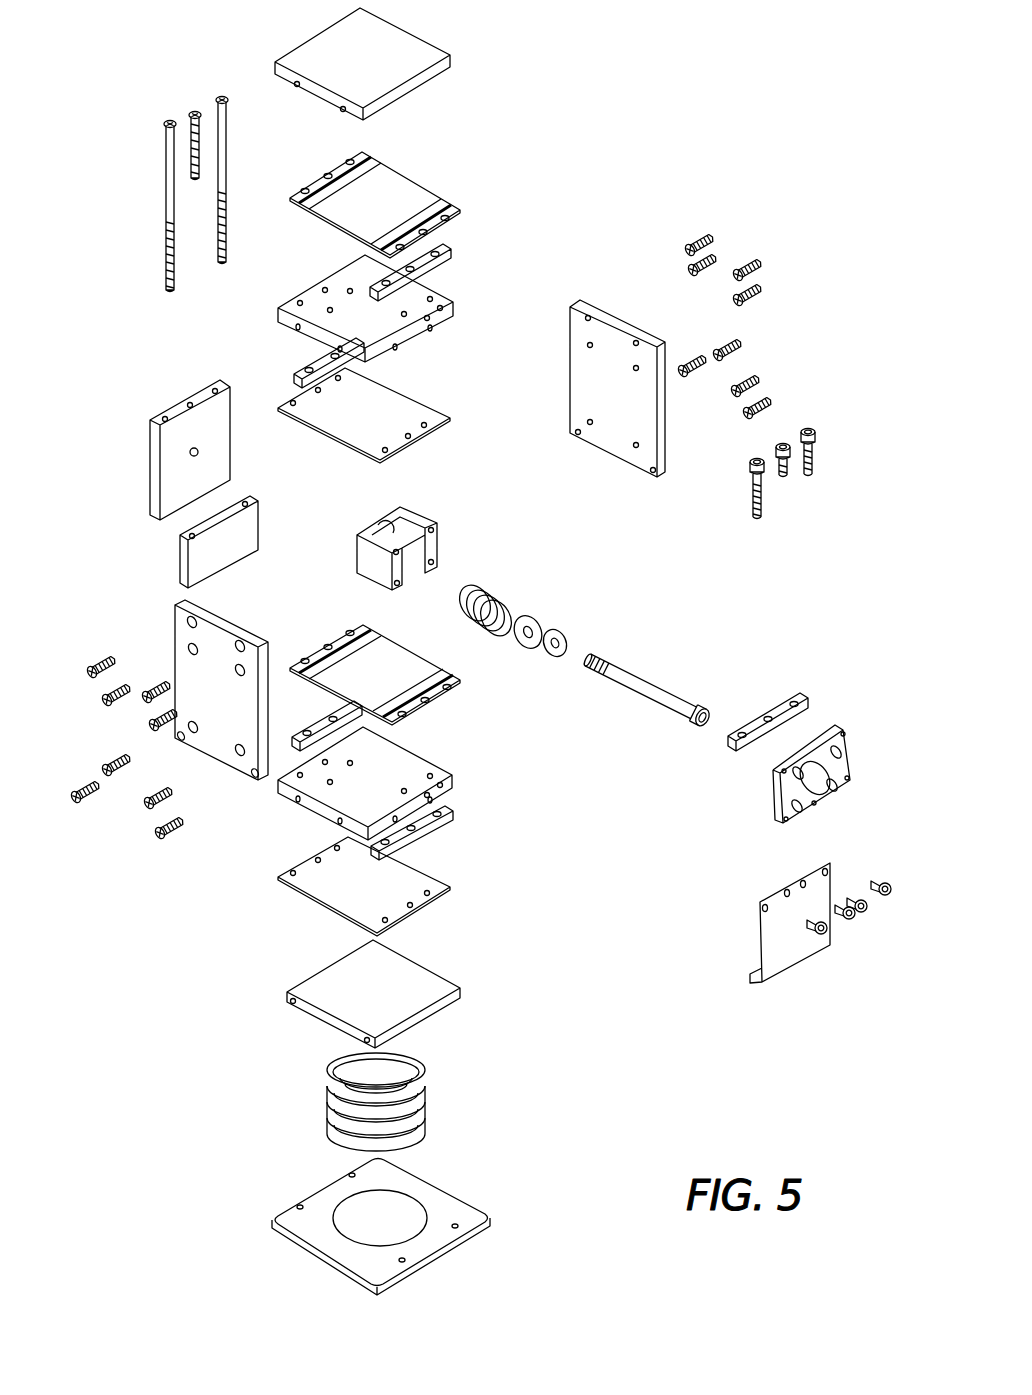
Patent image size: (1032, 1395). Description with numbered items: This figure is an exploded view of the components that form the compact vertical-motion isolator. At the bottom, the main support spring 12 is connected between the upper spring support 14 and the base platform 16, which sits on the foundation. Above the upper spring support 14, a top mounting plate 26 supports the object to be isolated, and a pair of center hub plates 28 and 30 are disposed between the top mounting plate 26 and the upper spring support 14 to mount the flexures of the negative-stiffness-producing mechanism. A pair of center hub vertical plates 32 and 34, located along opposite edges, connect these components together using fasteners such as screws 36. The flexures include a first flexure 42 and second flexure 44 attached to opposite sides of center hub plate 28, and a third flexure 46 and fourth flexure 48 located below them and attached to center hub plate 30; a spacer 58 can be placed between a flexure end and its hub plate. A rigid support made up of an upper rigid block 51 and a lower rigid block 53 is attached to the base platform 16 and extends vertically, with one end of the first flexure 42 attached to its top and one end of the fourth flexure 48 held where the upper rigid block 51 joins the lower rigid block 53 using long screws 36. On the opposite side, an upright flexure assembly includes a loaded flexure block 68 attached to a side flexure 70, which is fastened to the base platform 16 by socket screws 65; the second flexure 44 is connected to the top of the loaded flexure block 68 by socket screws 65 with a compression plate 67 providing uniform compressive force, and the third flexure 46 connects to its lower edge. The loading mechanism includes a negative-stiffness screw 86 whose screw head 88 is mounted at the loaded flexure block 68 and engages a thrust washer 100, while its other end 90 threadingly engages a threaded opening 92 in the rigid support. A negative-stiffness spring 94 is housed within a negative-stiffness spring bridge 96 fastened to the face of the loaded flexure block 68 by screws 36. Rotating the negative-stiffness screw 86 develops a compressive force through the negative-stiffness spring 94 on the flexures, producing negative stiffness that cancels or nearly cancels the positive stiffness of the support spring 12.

The main support spring 12 is at (413, 1110).
The upper spring support 14 is at (424, 1000).
The base platform 16 is at (445, 1218).
The top mounting plate 26 is at (395, 55).
The center hub plate 28 is at (425, 298).
The center hub plate 30 is at (410, 770).
The center hub vertical plate 32 is at (200, 666).
The center hub vertical plate 34 is at (614, 325).
The screws 36 is at (170, 196).
The first flexure 42 is at (393, 203).
The second flexure 44 is at (390, 410).
The third flexure 46 is at (410, 672).
The fourth flexure 48 is at (410, 890).
The upper rigid block 51 is at (158, 458).
The lower rigid block 53 is at (185, 563).
The spacer 58 is at (447, 256).
The socket screws 65 is at (815, 478).
The compression plate 67 is at (808, 704).
The loaded flexure block 68 is at (845, 760).
The side flexure 70 is at (768, 942).
The negative-stiffness screw 86 is at (675, 697).
The screw head 88 is at (702, 731).
The other end of negative-stiffness screw 90 is at (589, 667).
The threaded opening 92 is at (200, 450).
The negative-stiffness spring 94 is at (505, 600).
The negative-stiffness spring bridge 96 is at (420, 518).
The thrust washer 100 is at (543, 620).